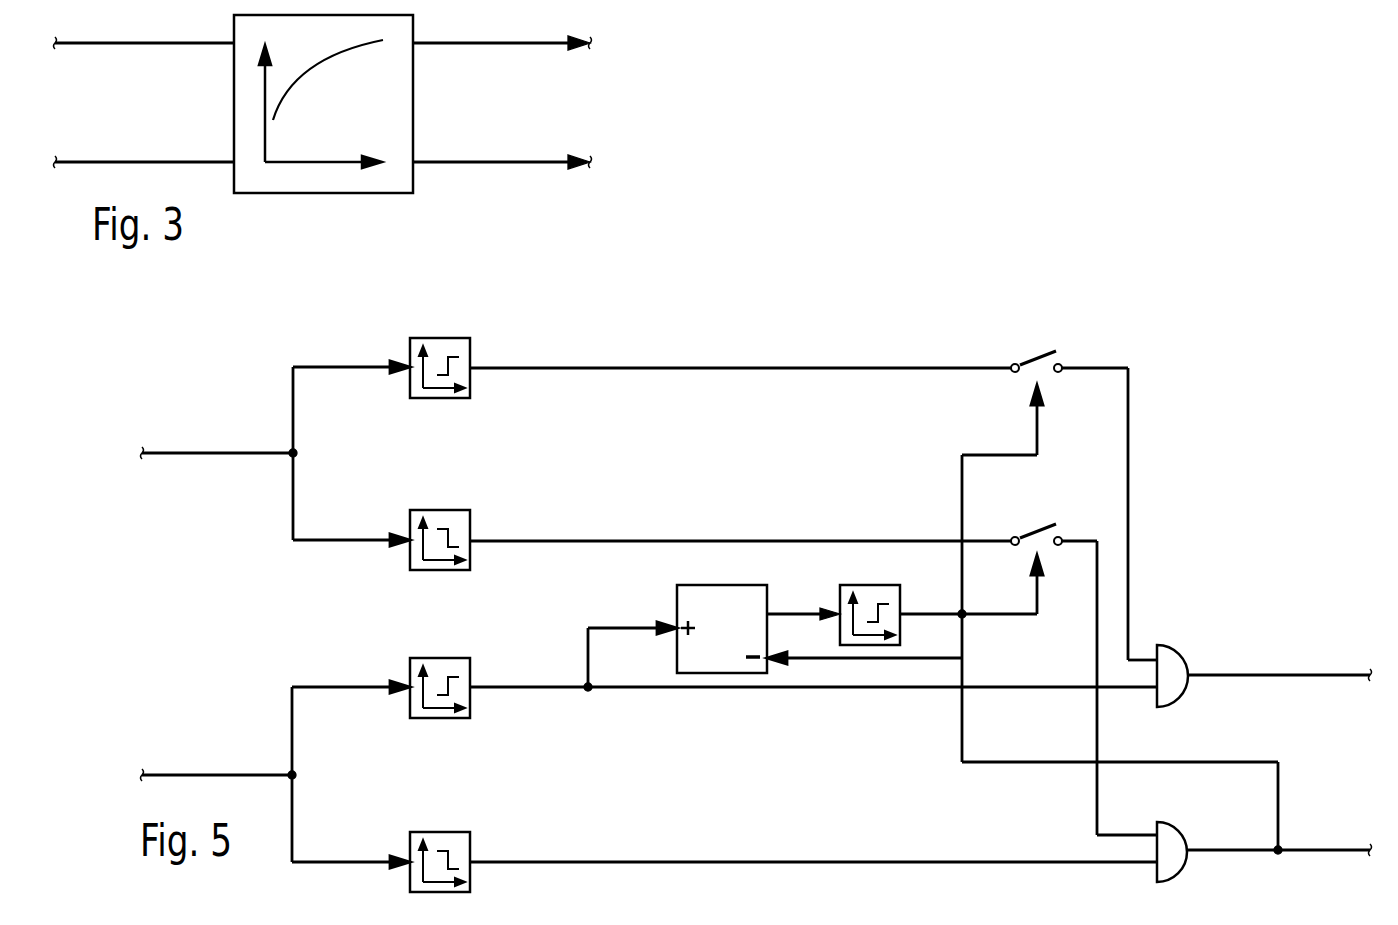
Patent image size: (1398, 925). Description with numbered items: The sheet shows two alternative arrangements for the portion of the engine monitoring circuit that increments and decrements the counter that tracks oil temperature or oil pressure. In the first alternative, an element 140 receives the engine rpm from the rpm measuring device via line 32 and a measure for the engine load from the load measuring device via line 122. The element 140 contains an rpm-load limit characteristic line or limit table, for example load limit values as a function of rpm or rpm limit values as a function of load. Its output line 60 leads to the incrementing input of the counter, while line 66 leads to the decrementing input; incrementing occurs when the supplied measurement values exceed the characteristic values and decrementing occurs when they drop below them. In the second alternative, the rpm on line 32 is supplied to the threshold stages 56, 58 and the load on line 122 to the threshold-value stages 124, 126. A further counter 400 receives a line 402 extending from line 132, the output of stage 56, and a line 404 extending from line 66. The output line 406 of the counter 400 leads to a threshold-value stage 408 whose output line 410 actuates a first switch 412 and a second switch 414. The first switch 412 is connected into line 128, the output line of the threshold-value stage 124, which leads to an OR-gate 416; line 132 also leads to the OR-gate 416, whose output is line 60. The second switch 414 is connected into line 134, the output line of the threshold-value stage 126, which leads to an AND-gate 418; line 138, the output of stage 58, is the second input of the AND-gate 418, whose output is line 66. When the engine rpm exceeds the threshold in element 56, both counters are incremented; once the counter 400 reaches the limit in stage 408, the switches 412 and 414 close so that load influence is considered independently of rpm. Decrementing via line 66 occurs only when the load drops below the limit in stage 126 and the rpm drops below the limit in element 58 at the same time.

In FIG. 3, the line 32 is at (110, 48).
In FIG. 5, the line 32 is at (212, 775).
In FIG. 3, the line 122 is at (180, 162).
In FIG. 5, the line 122 is at (213, 453).
In FIG. 3, the output line 60 is at (477, 43).
In FIG. 5, the output line 60 is at (1312, 675).
In FIG. 3, the line 66 is at (530, 162).
In FIG. 5, the line 66 is at (1340, 850).
In FIG. 3, the element 140 is at (310, 193).
In FIG. 5, the threshold-value stage 124 is at (458, 343).
In FIG. 5, the threshold-value stage 126 is at (450, 515).
In FIG. 5, the line 128 is at (713, 368).
In FIG. 5, the line 134 is at (708, 541).
In FIG. 5, the element 56 is at (452, 660).
In FIG. 5, the element 58 is at (445, 837).
In FIG. 5, the line 132 is at (520, 687).
In FIG. 5, the line 138 is at (665, 862).
In FIG. 5, the counter 400 is at (718, 590).
In FIG. 5, the line 402 is at (610, 625).
In FIG. 5, the output line 406 is at (800, 614).
In FIG. 5, the threshold-value stage 408 is at (868, 583).
In FIG. 5, the output line 410 is at (938, 618).
In FIG. 5, the first switch 412 is at (1036, 335).
In FIG. 5, the second switch 414 is at (1052, 505).
In FIG. 5, the OR-gate 416 is at (1172, 628).
In FIG. 5, the AND-gate 418 is at (1208, 864).
In FIG. 5, the line 404 is at (962, 725).